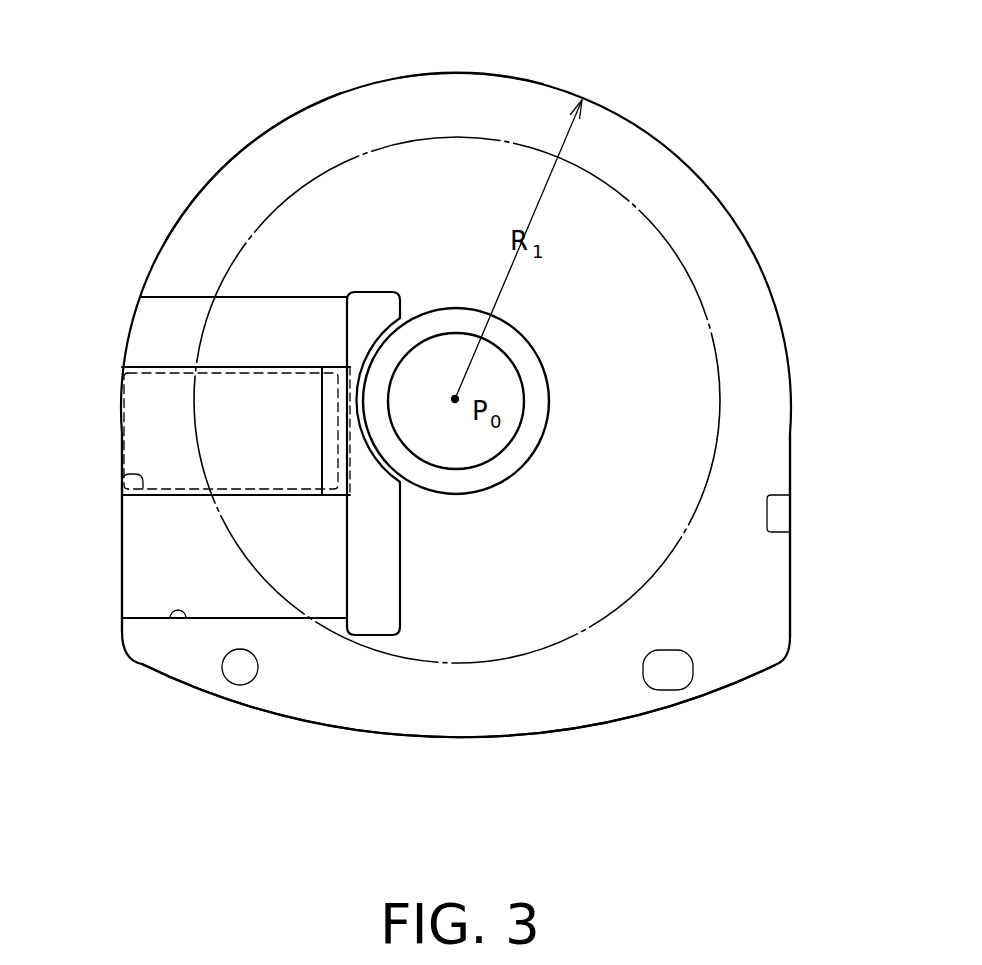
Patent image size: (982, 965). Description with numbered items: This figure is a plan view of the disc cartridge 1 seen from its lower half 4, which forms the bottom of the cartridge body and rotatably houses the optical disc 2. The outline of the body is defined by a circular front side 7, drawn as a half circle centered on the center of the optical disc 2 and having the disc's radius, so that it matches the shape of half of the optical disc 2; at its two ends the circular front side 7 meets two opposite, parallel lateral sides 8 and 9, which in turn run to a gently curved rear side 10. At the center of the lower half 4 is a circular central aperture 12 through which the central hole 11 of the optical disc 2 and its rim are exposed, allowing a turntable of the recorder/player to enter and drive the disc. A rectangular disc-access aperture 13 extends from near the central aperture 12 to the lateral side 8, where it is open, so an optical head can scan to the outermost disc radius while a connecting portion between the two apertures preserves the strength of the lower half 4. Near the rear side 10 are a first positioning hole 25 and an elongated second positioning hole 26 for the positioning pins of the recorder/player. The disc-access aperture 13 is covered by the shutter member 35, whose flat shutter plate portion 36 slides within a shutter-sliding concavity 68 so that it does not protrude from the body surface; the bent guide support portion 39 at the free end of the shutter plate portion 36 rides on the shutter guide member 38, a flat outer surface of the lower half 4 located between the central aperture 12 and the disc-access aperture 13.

The disc cartridge 1 is at (792, 588).
The optical disc 2 is at (565, 182).
The lower half 4 is at (224, 171).
The circular front side 7 is at (494, 75).
The lateral side 8 is at (122, 584).
The lateral side 9 is at (791, 450).
The rear side 10 is at (467, 738).
The central hole 11 is at (525, 385).
The circular central aperture 12 is at (530, 440).
The disc-access aperture 13 is at (122, 486).
The first positioning hole 25 is at (232, 674).
The second positioning hole 26 is at (676, 680).
The shutter member 35 is at (132, 441).
The shutter plate portion 36 is at (132, 391).
The shutter guide member 38 is at (400, 582).
The guide support portion 39 is at (343, 497).
The shutter-sliding concavity 68 is at (178, 620).